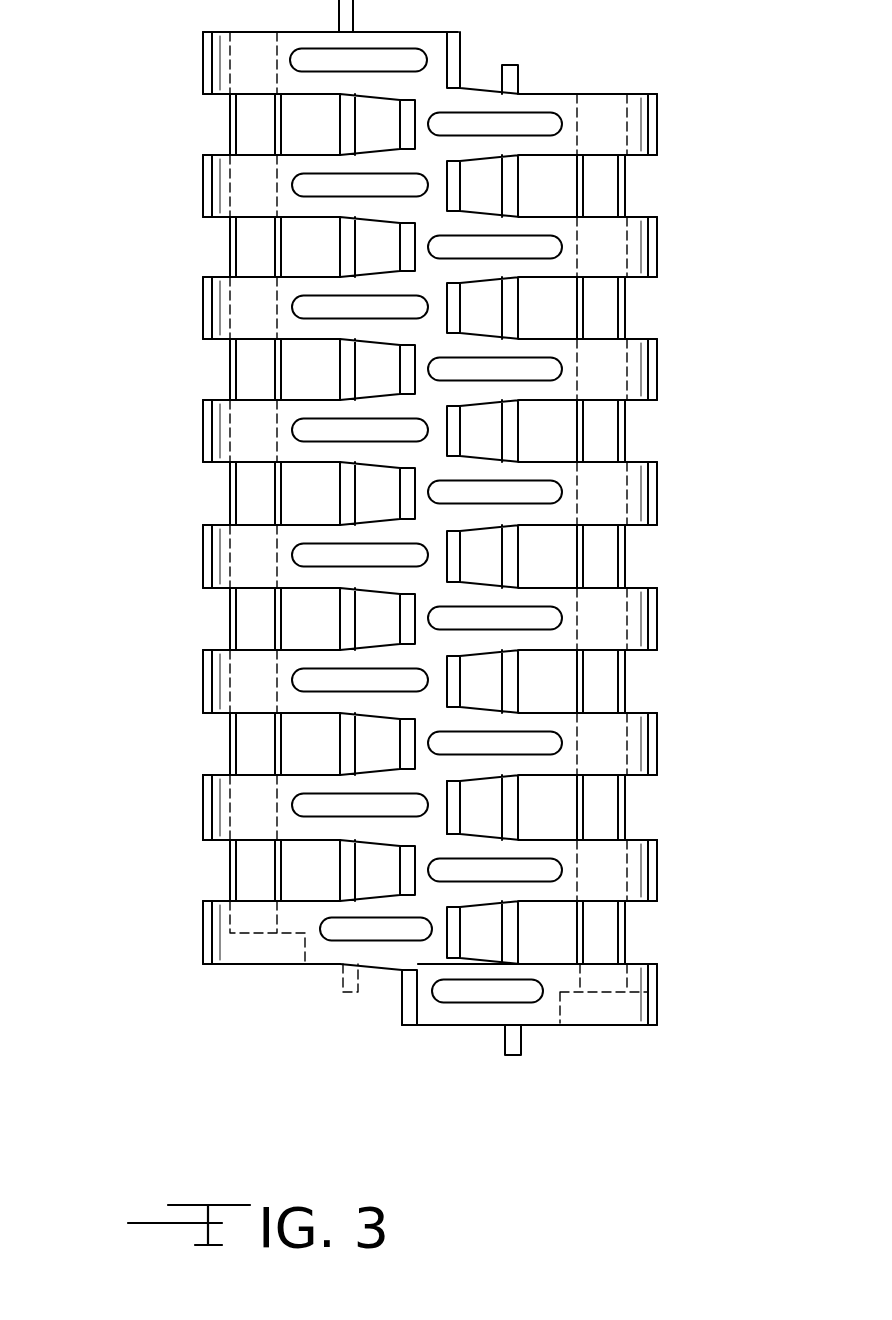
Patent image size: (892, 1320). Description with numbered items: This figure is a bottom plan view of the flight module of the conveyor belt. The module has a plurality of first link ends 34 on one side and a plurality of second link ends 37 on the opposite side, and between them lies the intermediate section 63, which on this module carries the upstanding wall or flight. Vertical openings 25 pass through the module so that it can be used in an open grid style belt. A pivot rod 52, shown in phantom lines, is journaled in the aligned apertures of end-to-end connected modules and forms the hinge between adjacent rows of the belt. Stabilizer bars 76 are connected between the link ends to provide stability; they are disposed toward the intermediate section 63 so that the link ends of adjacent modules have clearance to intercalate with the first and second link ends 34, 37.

The vertical openings 25 is at (530, 122).
The first link ends 34 is at (645, 868).
The second link ends 37 is at (217, 817).
The pivot rod 52 is at (243, 124).
The intermediate section 63 is at (426, 775).
The stabilizer bars 76 is at (335, 245).